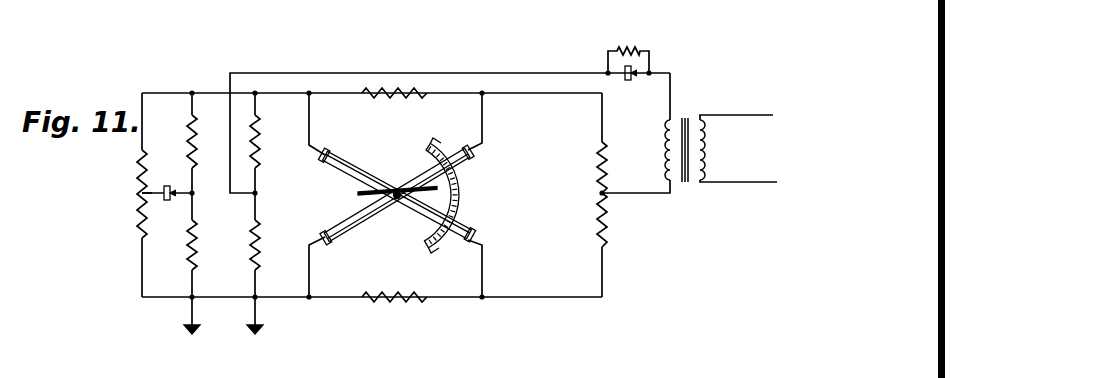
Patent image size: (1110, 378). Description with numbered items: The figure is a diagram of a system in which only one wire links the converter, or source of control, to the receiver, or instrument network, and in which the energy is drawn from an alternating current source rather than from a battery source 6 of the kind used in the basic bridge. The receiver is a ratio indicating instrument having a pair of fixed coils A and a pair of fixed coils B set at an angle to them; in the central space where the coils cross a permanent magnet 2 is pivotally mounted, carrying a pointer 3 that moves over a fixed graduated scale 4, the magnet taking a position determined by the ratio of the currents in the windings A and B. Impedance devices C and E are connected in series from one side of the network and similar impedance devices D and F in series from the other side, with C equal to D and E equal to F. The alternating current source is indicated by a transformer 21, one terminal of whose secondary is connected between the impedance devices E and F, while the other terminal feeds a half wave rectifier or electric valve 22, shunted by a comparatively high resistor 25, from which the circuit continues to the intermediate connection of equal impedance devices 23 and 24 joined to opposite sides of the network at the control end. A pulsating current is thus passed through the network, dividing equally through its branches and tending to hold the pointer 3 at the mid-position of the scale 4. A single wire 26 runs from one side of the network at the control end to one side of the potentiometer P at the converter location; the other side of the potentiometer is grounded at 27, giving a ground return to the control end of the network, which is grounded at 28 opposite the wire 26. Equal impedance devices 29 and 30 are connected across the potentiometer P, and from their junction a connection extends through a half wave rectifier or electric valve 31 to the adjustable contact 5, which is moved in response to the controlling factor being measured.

The permanent magnet 2 is at (368, 196).
The pointer 3 is at (461, 206).
The fixed graduated scale 4 is at (437, 188).
The adjustable contact 5 is at (151, 196).
The source 6 is at (188, 0).
The transformer 21 is at (689, 143).
The half wave rectifier or electric valve 22 is at (628, 81).
The impedance device 23 is at (259, 143).
The impedance device 24 is at (259, 243).
The resistor 25 is at (628, 48).
The single wire 26 is at (210, 92).
The ground connection 27 is at (190, 345).
The ground connection 28 is at (260, 345).
The impedance device 29 is at (190, 128).
The impedance device 30 is at (198, 241).
The half wave rectifier or electric valve 31 is at (168, 186).
The potentiometer or variable impedance device P is at (127, 194).
The fixed coils A is at (340, 154).
The fixed coils B is at (338, 222).
The impedance device C is at (394, 105).
The impedance device D is at (394, 282).
The impedance device E is at (613, 167).
The impedance device F is at (613, 220).